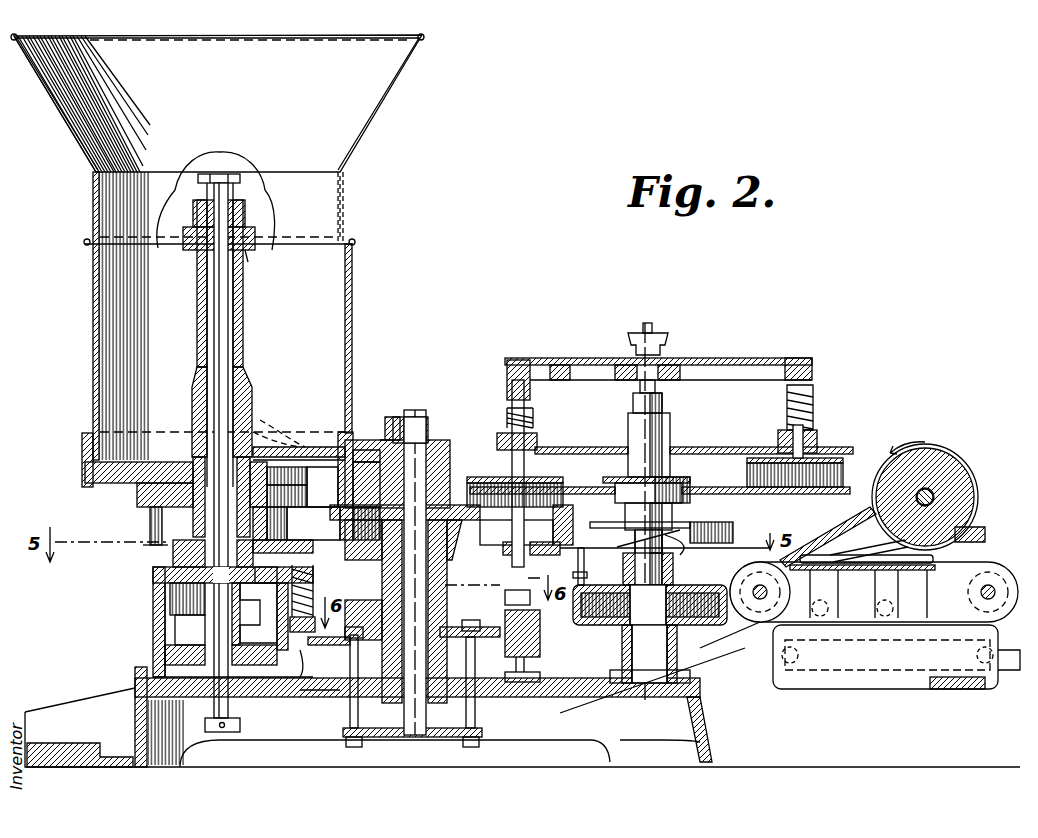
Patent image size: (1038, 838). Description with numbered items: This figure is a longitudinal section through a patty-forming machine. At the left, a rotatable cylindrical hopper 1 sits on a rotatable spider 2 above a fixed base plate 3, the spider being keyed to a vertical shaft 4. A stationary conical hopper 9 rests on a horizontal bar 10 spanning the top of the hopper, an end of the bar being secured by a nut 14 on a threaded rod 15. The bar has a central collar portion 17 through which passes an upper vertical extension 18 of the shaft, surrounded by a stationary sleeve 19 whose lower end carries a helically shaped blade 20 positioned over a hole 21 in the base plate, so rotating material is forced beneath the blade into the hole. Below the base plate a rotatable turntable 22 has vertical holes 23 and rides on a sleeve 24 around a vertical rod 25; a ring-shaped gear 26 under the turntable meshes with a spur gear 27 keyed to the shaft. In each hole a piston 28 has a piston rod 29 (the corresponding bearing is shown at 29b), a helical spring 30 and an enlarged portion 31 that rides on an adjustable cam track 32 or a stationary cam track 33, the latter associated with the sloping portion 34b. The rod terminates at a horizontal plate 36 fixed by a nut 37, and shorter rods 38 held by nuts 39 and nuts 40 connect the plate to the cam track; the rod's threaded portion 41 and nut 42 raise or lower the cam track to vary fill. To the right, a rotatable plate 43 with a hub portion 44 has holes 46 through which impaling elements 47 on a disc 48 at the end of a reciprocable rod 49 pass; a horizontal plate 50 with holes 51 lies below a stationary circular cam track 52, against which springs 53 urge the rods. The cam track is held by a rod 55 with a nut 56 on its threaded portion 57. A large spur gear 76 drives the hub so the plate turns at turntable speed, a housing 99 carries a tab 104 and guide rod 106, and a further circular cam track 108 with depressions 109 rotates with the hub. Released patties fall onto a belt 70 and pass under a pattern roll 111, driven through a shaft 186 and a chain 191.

The rotatable cylindrical hopper 1 is at (350, 303).
The rotatable spider 2 is at (85, 474).
The fixed base plate 3 is at (137, 500).
The vertical shaft 4 is at (210, 720).
The stationary conical hopper 9 is at (385, 92).
The horizontal bar 10 is at (193, 211).
The nut 14 is at (200, 183).
The threaded rod 15 is at (190, 630).
The central collar portion 17 is at (247, 258).
The upper vertical extension 18 is at (234, 300).
The stationary sleeve 19 is at (197, 318).
The helically shaped blade 20 is at (290, 447).
The hole 21 is at (338, 496).
The rotatable turntable 22 is at (450, 505).
The holes 23 is at (340, 519).
The sleeve 24 is at (447, 565).
The vertical rod 25 is at (405, 737).
The ring-shaped gear 26 is at (276, 574).
The spur gear 27 is at (173, 550).
The piston 28 is at (298, 532).
The piston rod 29 is at (285, 596).
The bearing 29b is at (520, 537).
The helical spring 30 is at (311, 598).
The enlarged portion 31 is at (290, 626).
The adjustable cam track 32 is at (315, 645).
The stationary cam track 33 is at (540, 639).
The sloping portion 34b is at (310, 690).
The horizontal plate 36 is at (450, 737).
The nut 37 is at (412, 737).
The shorter rods 38 is at (360, 714).
The nuts 39 is at (352, 748).
The nuts 40 is at (354, 627).
The threaded portion 41 is at (412, 410).
The nut 42 is at (428, 430).
The rotatable plate 43 is at (712, 495).
The hub portion 44 is at (685, 477).
The holes 46 is at (570, 487).
The impaling element 47 is at (563, 499).
The disc 48 is at (555, 474).
The reciprocable rod 49 is at (512, 460).
The horizontal plate 50 is at (700, 447).
The holes 51 is at (778, 436).
The circular cam track 52 is at (515, 358).
The springs 53 is at (534, 416).
The rod 55 is at (662, 392).
The nut 56 is at (668, 345).
The threaded portion 57 is at (650, 322).
The belt 70 is at (990, 562).
The large spur gear 76 is at (622, 628).
The housing 99 is at (573, 610).
The tab 104 is at (587, 574).
The guide rod 106 is at (584, 553).
The circular cam track 108 is at (733, 527).
The depressions 109 is at (665, 549).
The pattern roll 111 is at (935, 458).
The shaft 186 is at (753, 600).
The chain 191 is at (815, 540).